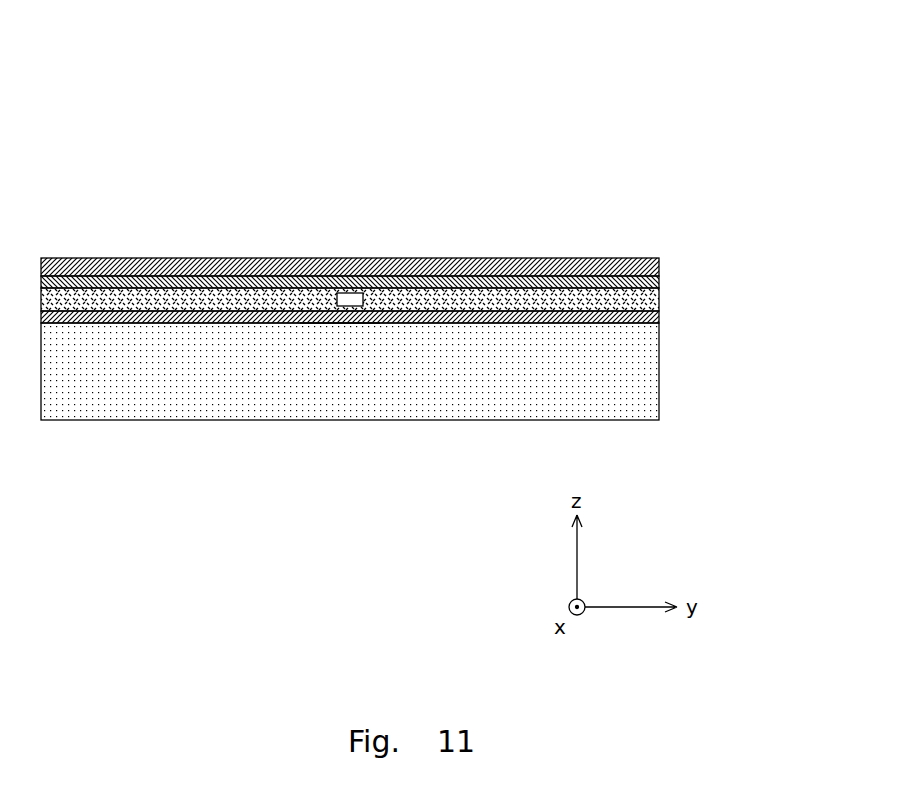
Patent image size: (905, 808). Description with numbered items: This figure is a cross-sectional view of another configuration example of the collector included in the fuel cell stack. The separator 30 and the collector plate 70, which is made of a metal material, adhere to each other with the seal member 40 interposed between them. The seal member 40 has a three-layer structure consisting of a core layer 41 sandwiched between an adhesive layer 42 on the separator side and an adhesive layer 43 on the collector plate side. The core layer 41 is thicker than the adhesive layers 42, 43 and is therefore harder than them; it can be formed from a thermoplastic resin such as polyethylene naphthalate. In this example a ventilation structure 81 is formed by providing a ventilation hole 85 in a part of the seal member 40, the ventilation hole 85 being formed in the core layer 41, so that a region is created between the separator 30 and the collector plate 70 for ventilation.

The separator 30 is at (630, 258).
The seal member 40 is at (439, 263).
The core layer 41 is at (411, 243).
The adhesive layer 42 is at (659, 283).
The adhesive layer 43 is at (659, 318).
The collector plate 70 is at (652, 385).
The ventilation structure 81 is at (338, 331).
The ventilation hole 85 is at (343, 292).